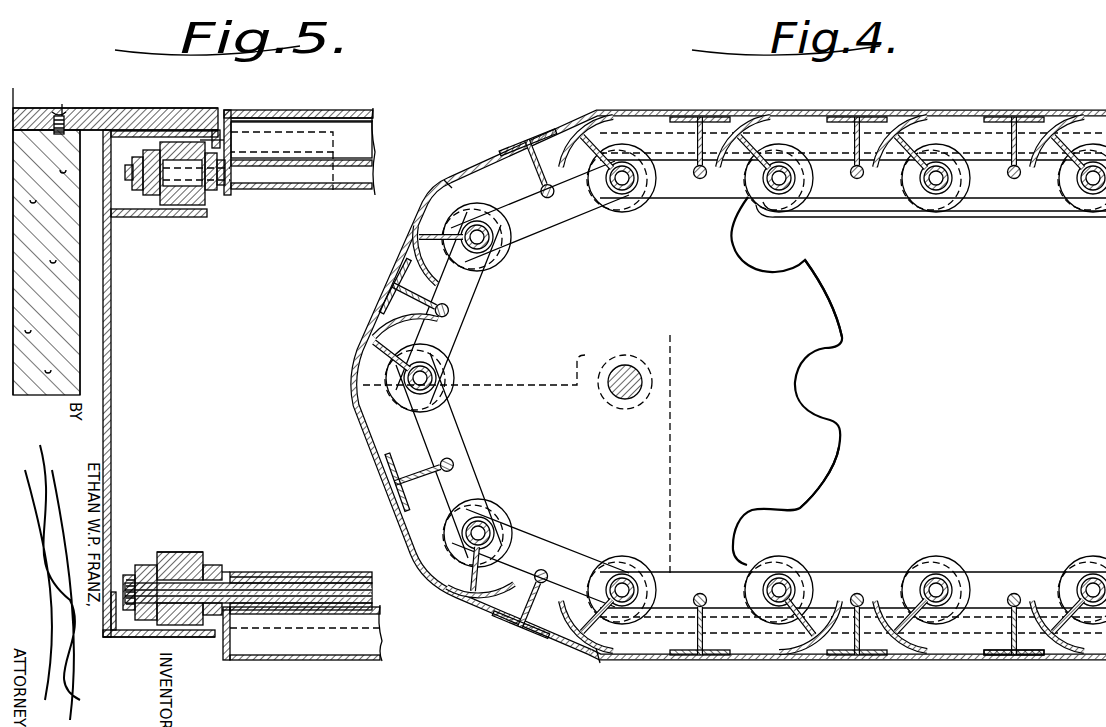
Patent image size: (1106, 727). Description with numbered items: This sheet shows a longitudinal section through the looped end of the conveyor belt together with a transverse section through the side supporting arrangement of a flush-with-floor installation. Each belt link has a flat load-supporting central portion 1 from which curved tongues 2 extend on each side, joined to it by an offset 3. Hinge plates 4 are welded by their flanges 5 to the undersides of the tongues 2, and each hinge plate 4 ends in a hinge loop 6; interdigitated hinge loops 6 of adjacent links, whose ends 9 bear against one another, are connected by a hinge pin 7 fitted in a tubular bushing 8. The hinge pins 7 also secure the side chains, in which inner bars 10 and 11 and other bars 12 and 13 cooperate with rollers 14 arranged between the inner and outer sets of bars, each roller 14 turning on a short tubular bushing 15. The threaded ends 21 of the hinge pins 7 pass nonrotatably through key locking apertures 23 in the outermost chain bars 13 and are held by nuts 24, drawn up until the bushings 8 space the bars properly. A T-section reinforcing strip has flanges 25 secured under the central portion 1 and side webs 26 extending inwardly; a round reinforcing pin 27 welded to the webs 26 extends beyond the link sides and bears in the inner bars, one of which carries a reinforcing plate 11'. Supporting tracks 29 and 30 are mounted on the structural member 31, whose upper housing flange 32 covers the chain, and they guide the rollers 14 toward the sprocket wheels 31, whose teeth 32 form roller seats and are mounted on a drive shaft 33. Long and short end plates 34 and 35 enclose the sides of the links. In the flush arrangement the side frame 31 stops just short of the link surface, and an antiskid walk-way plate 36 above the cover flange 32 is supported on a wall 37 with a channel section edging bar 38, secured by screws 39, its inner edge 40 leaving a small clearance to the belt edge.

In FIG. 5, the central portion 1 is at (295, 110).
In FIG. 4, the central portion 1 is at (563, 131).
In FIG. 4, the tongues 2 is at (427, 212).
In FIG. 4, the offset 3 is at (446, 188).
In FIG. 5, the hinge plates 4 is at (358, 138).
In FIG. 4, the hinge plates 4 is at (742, 160).
In FIG. 5, the flanges 5 is at (372, 118).
In FIG. 4, the flanges 5 is at (742, 165).
In FIG. 5, the hinge loop 6 is at (355, 172).
In FIG. 4, the hinge loop 6 is at (795, 576).
In FIG. 5, the hinge pin 7 is at (365, 592).
In FIG. 4, the hinge pin 7 is at (938, 578).
In FIG. 5, the tubular bushing 8 is at (315, 575).
In FIG. 5, the ends of hinge loops 9 is at (333, 178).
In FIG. 5, the inner bar 10 is at (222, 570).
In FIG. 4, the inner bar 10 is at (680, 196).
In FIG. 5, the inner bar 11 is at (223, 565).
In FIG. 4, the inner bar 11 is at (745, 384).
In FIG. 4, the reinforcing plate 11' is at (497, 385).
In FIG. 5, the outer bar 12 is at (148, 565).
In FIG. 5, the outermost chain bar 13 is at (136, 576).
In FIG. 5, the rollers 14 is at (205, 200).
In FIG. 5, the short tubular bushing 15 is at (195, 553).
In FIG. 5, the threaded ends 21 is at (134, 217).
In FIG. 4, the key locking apertures 23 is at (597, 654).
In FIG. 5, the nuts 24 is at (143, 168).
In FIG. 4, the flanges 25 is at (1000, 657).
In FIG. 4, the side webs 26 is at (400, 288).
In FIG. 4, the reinforcing pin 27 is at (450, 312).
In FIG. 5, the supporting track 29 is at (195, 216).
In FIG. 4, the supporting track 29 is at (1010, 216).
In FIG. 5, the supporting track 30 is at (203, 634).
In FIG. 4, the supporting track 30 is at (948, 660).
In FIG. 5, the structural member 31 is at (111, 383).
In FIG. 4, the structural member 31 is at (762, 390).
In FIG. 5, the housing flange 32 is at (135, 120).
In FIG. 4, the housing flange 32 is at (818, 310).
In FIG. 4, the drive shaft 33 is at (645, 376).
In FIG. 5, the long end plate 34 is at (240, 142).
In FIG. 4, the long end plate 34 is at (895, 135).
In FIG. 5, the short end plate 35 is at (225, 640).
In FIG. 4, the short end plate 35 is at (1040, 140).
In FIG. 5, the walk-way plate 36 is at (72, 125).
In FIG. 5, the wall 37 is at (63, 291).
In FIG. 5, the channel section edging bar 38 is at (64, 116).
In FIG. 5, the screws 39 is at (58, 114).
In FIG. 5, the inner edge 40 is at (220, 128).